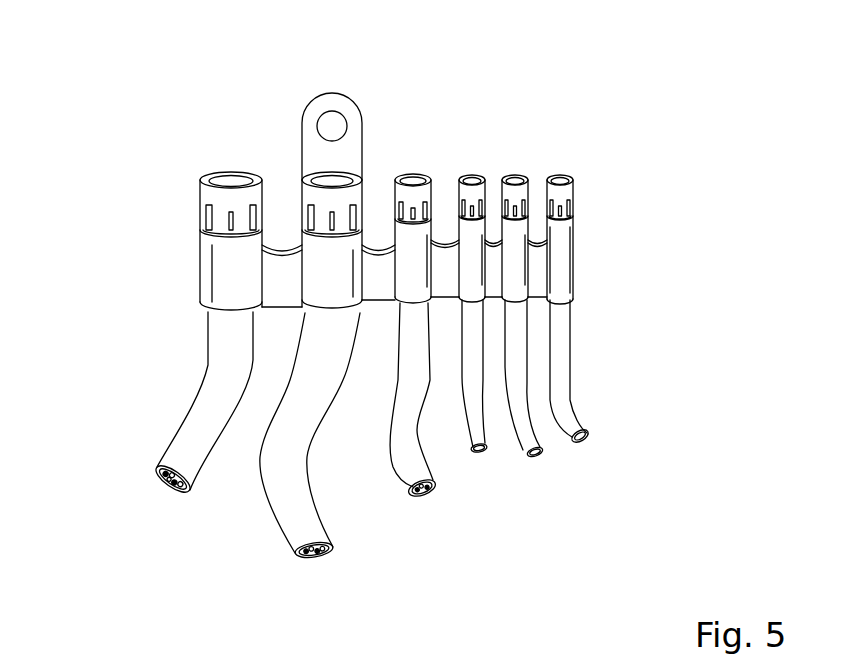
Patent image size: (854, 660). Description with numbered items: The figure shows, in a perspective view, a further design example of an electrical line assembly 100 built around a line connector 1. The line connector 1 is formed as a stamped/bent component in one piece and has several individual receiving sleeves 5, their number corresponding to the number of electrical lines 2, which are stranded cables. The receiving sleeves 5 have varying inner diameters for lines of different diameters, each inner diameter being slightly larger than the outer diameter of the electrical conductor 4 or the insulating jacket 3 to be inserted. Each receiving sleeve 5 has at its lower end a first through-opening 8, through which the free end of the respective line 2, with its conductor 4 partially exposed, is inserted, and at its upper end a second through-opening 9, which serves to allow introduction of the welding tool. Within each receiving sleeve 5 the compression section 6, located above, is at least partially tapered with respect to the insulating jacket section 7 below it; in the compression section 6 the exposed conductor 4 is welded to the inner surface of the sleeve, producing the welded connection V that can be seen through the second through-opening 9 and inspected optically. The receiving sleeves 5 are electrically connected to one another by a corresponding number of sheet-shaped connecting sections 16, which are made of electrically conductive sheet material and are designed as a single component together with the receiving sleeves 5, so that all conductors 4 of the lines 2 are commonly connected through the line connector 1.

The electrical line assembly 100 is at (113, 102).
The line connector 1 is at (178, 270).
The electrical line 2 is at (357, 466).
The insulating jacket 3 is at (203, 415).
The electrical conductor 4 is at (157, 484).
The receiving sleeve 5 is at (213, 257).
The compression section 6 is at (573, 180).
The insulating jacket section 7 is at (573, 223).
The first through-opening 8 is at (567, 302).
The second through-opening 9 is at (215, 180).
The connecting section 16 is at (295, 285).
The welded connection V is at (236, 176).